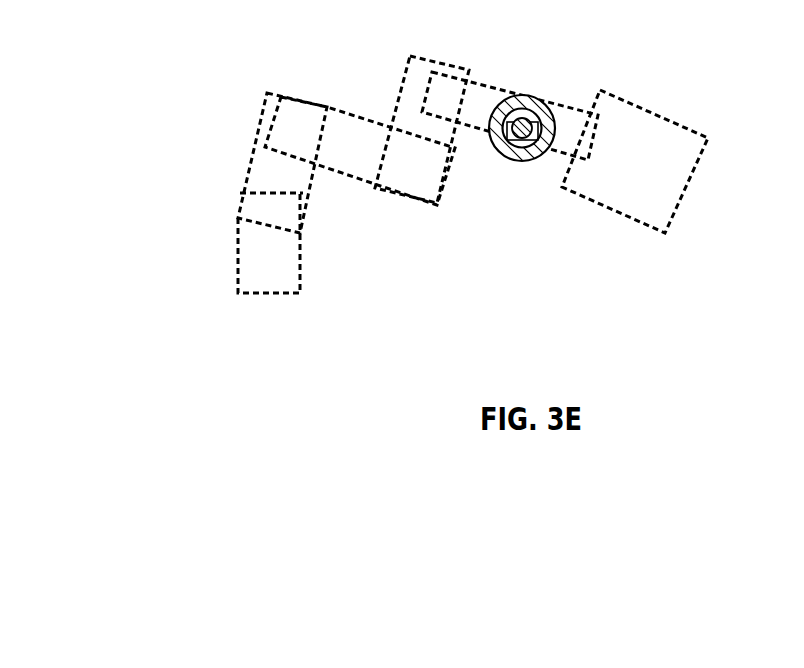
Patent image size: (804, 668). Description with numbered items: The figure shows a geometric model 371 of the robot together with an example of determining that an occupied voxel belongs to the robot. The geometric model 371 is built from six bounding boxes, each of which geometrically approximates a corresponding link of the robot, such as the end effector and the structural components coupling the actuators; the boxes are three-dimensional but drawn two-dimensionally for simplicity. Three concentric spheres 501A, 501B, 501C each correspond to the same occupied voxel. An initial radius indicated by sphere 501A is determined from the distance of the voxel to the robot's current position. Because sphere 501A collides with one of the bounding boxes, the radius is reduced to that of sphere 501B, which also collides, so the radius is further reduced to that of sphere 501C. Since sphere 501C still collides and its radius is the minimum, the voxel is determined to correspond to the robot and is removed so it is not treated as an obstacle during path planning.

The geometric model 371 is at (120, 131).
The sphere 501A is at (539, 163).
The sphere 501B is at (518, 161).
The sphere 501C is at (495, 153).